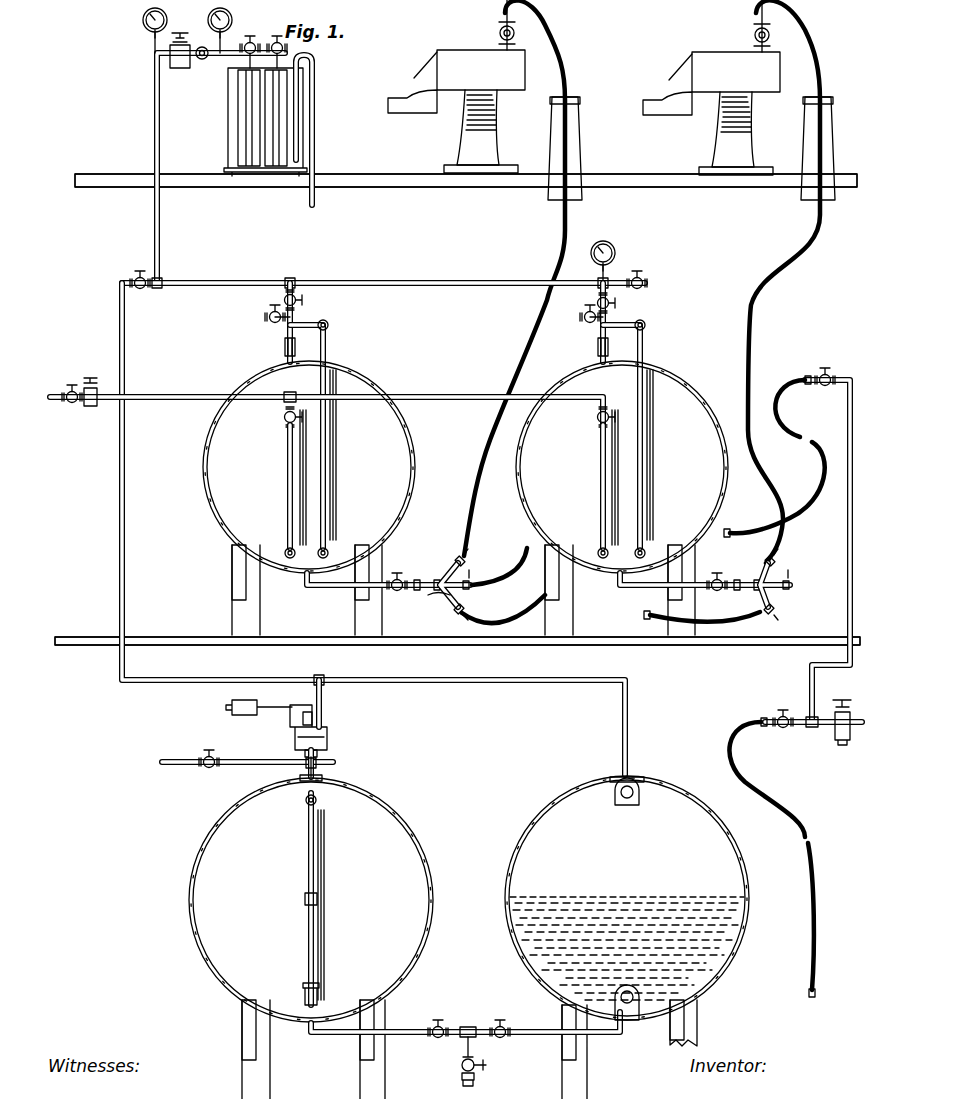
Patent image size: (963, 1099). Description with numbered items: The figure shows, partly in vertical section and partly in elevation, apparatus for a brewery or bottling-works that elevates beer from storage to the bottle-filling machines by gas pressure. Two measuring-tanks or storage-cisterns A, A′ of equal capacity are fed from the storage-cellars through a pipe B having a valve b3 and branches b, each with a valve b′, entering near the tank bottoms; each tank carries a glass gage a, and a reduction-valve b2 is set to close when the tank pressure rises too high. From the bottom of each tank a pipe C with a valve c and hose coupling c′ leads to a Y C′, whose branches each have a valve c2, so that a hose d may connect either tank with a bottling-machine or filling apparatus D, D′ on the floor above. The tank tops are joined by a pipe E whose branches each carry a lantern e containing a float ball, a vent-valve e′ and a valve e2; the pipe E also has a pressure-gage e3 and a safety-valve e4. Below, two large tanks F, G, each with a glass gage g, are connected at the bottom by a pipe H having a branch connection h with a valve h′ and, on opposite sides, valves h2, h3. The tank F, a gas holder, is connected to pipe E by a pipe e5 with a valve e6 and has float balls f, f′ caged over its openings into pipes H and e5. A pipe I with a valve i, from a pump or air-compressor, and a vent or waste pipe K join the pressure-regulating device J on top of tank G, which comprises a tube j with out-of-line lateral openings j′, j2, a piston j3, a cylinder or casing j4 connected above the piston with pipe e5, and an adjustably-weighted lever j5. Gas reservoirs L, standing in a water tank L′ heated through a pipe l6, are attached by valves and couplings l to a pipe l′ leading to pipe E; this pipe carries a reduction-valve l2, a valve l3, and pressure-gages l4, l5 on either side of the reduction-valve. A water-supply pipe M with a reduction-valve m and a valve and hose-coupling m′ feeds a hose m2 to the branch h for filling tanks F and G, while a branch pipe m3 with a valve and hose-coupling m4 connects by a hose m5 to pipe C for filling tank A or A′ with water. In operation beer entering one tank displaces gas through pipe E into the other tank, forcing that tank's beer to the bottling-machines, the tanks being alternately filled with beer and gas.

The measuring-tank A is at (203, 467).
The measuring-tank A′ is at (530, 465).
The glass gage a is at (328, 450).
The pipe B is at (172, 398).
The branch b is at (286, 482).
The valve b′ is at (278, 421).
The reduction-valve b2 is at (90, 408).
The valve b3 is at (72, 384).
The pipe C is at (345, 588).
The Y C′ is at (437, 578).
The valve c is at (397, 572).
The hose coupling c′ is at (430, 597).
The valve c2 is at (470, 568).
The bottling-machine D is at (484, 56).
The bottling-machine D′ is at (727, 58).
The hose d is at (533, 330).
The pipe E is at (432, 283).
The lantern e is at (284, 345).
The vent-valve e′ is at (264, 311).
The valve e2 is at (302, 300).
The pressure-gage e3 is at (614, 247).
The safety-valve e4 is at (644, 272).
The pipe e5 is at (126, 540).
The valve e6 is at (140, 270).
The tank F is at (627, 898).
The float ball f is at (637, 990).
The float ball f′ is at (638, 805).
The tank G is at (190, 876).
The glass gage g is at (306, 862).
The pipe H is at (412, 1020).
The branch connection h is at (460, 1052).
The valve h′ is at (488, 1066).
The valve h2 is at (442, 1018).
The valve h3 is at (502, 1018).
The pipe I is at (176, 760).
The valve i is at (211, 750).
The pressure-regulating valve J is at (328, 728).
The tube j is at (318, 772).
The lateral opening j′ is at (303, 766).
The lateral opening j2 is at (318, 752).
The piston j3 is at (296, 737).
The cylinder j4 is at (326, 733).
The adjustably-weighted lever j5 is at (272, 706).
The vent pipe K is at (320, 766).
The reservoir L is at (245, 108).
The tank L′ is at (228, 145).
The valve and coupling l is at (288, 45).
The pipe l′ is at (155, 132).
The reduction-valve l2 is at (180, 32).
The valve l3 is at (202, 62).
The pressure-gage l4 is at (240, 12).
The pressure-gage l5 is at (142, 20).
The pipe l6 is at (315, 152).
The water-supply pipe M is at (858, 728).
The reduction-valve m is at (842, 699).
The valve and hose-coupling m′ is at (783, 710).
The hose m2 is at (795, 820).
The branch pipe m3 is at (848, 519).
The valve and hose-coupling m4 is at (838, 360).
The hose m5 is at (812, 478).